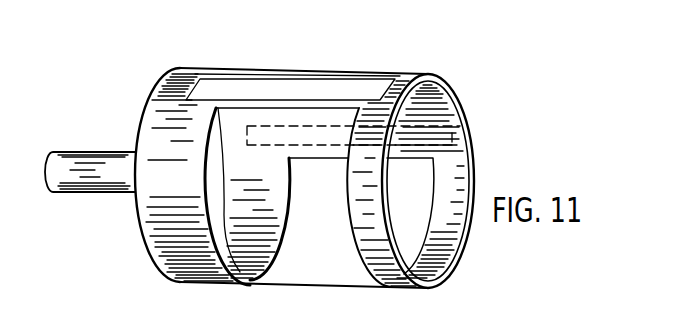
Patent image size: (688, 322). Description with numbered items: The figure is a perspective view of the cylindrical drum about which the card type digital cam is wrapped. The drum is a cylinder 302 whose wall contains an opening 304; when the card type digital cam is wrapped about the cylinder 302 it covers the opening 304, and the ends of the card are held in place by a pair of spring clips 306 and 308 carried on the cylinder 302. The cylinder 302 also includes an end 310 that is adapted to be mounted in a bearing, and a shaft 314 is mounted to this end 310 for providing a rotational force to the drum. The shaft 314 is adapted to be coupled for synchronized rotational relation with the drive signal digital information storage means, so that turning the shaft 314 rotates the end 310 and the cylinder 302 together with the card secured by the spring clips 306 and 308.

The cylinder 302 is at (461, 105).
The opening 304 is at (277, 251).
The spring clip 306 is at (327, 91).
The spring clip 308 is at (456, 134).
The end 310 is at (170, 84).
The shaft 314 is at (92, 152).